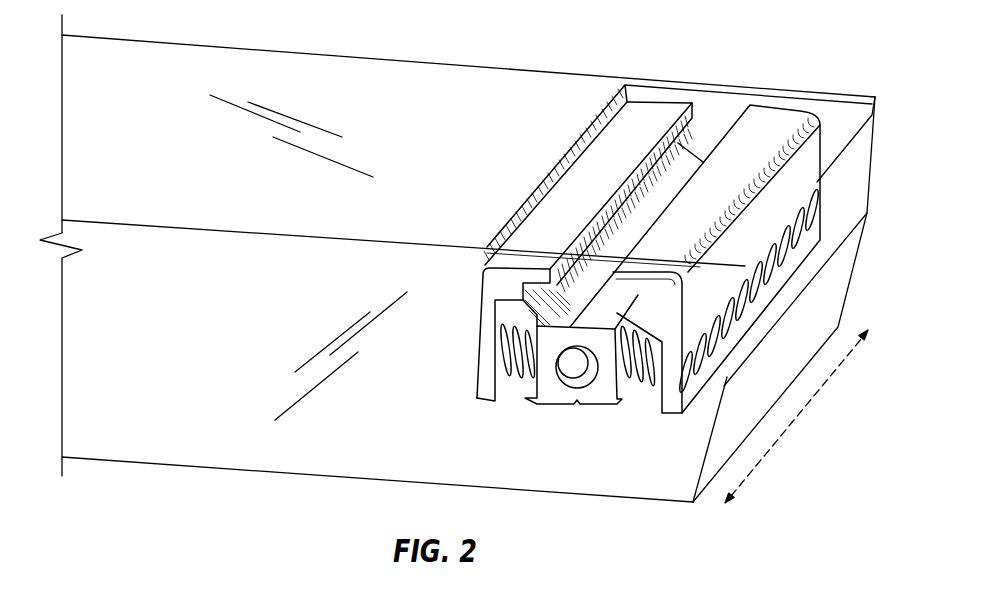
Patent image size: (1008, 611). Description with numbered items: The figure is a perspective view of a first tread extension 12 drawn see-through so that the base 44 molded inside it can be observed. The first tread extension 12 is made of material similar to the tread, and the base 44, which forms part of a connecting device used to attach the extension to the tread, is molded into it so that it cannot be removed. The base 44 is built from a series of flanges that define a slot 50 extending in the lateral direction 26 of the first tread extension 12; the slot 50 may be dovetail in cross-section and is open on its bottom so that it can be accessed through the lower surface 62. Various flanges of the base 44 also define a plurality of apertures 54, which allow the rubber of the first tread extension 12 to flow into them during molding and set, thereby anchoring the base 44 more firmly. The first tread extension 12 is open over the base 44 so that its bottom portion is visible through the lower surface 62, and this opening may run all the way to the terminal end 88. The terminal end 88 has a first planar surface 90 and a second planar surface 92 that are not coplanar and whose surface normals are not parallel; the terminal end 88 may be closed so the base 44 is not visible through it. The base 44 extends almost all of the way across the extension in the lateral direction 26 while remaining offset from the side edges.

The first tread extension 12 is at (330, 68).
The lower surface 62 is at (447, 78).
The base 44 is at (645, 110).
The slot 50 is at (570, 318).
The apertures 54 is at (683, 365).
The terminal end 88 is at (843, 222).
The first planar surface 90 is at (853, 188).
The second planar surface 92 is at (832, 305).
The lateral direction 26 is at (797, 417).